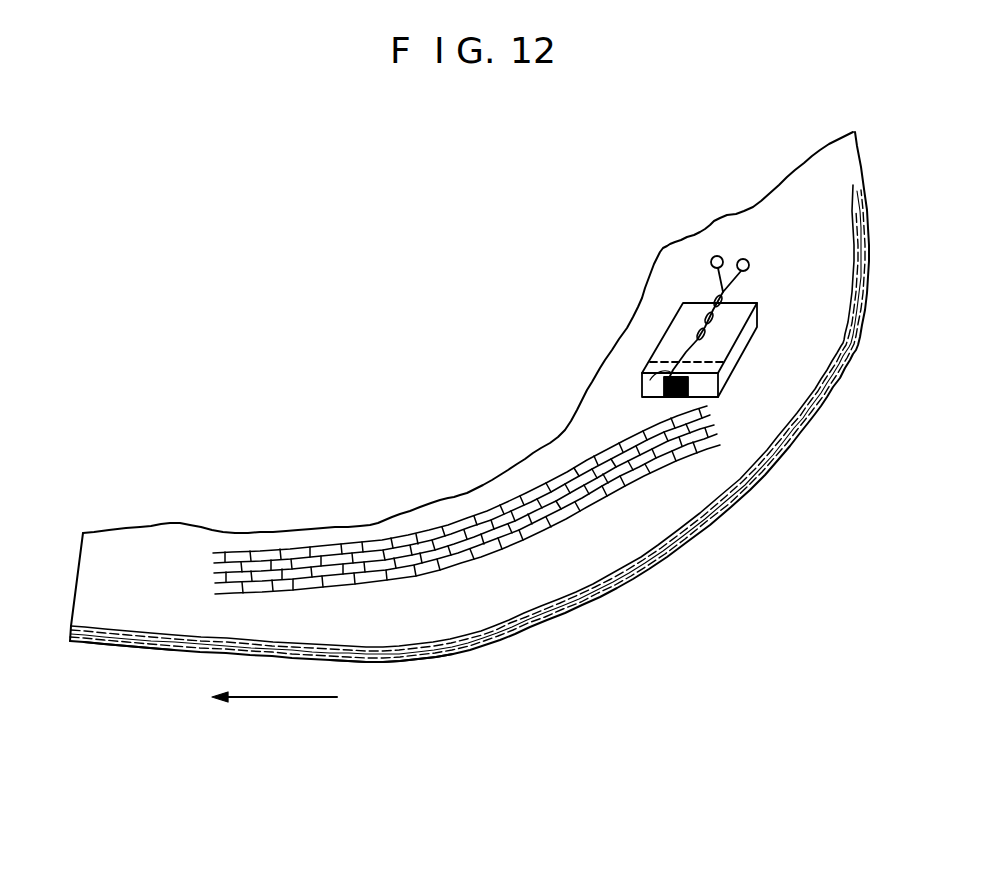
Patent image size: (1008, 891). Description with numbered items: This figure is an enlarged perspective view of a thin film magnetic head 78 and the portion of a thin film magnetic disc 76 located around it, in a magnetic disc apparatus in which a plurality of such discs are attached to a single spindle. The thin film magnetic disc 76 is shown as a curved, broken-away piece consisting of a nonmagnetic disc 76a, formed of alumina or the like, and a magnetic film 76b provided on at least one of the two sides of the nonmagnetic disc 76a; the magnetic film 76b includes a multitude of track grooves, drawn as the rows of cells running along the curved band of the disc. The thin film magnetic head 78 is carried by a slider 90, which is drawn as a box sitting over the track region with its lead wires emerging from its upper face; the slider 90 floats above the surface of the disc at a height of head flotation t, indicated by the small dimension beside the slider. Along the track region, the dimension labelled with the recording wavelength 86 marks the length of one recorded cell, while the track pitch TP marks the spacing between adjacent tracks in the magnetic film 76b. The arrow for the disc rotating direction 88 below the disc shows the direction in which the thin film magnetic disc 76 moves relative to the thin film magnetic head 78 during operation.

The thin film magnetic disc 76 is at (679, 564).
The nonmagnetic disc 76a is at (400, 659).
The magnetic film 76b is at (132, 649).
The thin film magnetic head 78 is at (640, 374).
The recording wavelength 86 is at (372, 545).
The disc rotating direction 88 is at (296, 699).
The slider 90 is at (675, 333).
The track pitch TP is at (203, 582).
The height of the head flotation t is at (720, 398).